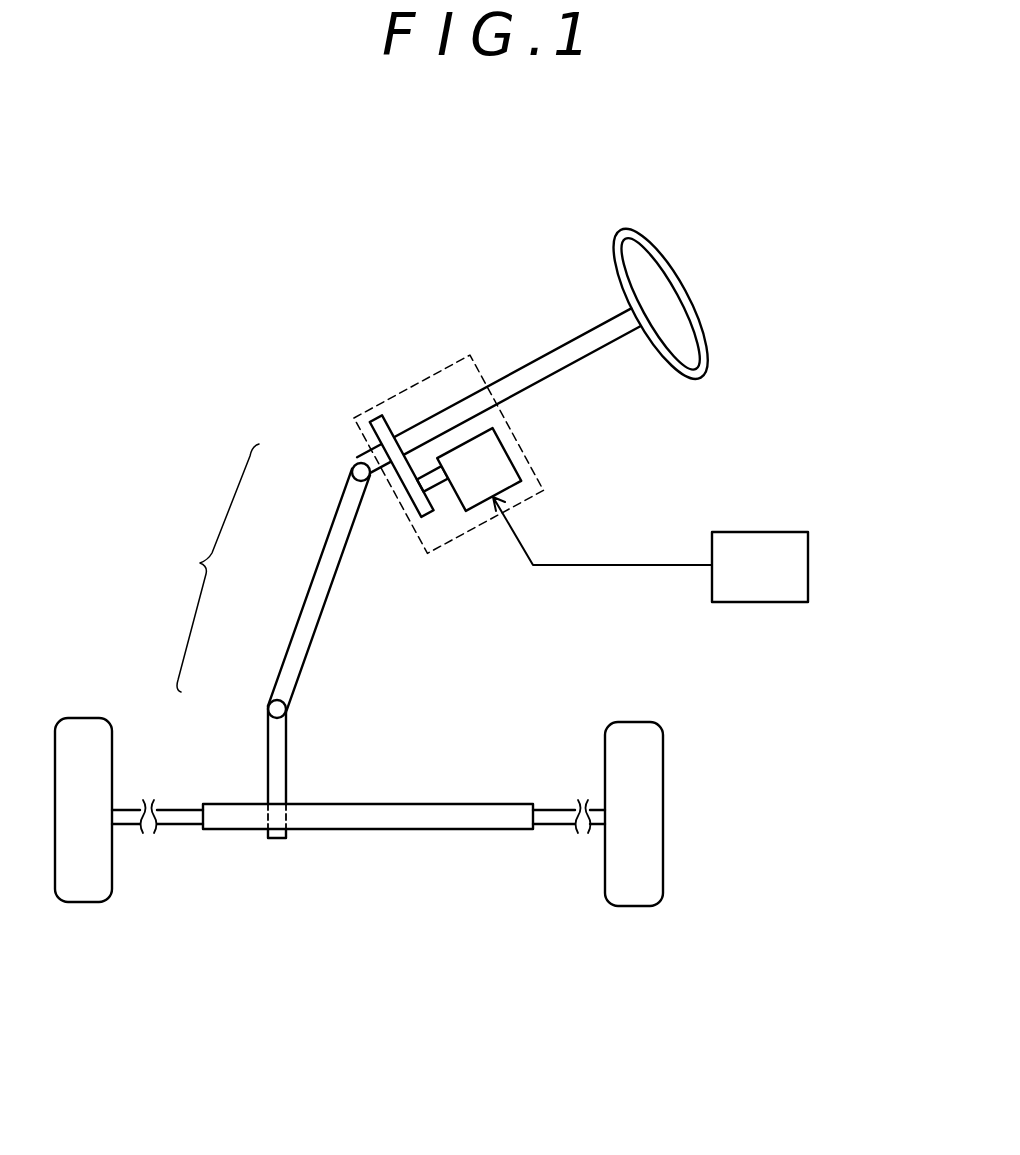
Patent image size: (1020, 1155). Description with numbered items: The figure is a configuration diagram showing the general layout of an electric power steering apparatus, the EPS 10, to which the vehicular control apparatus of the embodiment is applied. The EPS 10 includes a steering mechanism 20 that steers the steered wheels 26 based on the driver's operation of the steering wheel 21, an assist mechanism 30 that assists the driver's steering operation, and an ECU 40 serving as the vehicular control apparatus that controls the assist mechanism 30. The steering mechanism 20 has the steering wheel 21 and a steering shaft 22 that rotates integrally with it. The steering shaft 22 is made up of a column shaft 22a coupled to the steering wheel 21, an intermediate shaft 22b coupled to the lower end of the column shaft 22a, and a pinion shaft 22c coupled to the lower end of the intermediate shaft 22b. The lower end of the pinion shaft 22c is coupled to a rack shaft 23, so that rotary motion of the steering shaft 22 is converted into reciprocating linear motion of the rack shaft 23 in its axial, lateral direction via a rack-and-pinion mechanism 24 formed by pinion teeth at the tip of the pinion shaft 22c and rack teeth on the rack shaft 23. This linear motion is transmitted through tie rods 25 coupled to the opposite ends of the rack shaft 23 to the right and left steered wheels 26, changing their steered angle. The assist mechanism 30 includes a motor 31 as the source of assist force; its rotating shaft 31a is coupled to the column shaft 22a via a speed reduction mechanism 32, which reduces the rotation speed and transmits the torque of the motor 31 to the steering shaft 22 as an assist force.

The EPS 10 is at (820, 363).
The steering mechanism 20 is at (537, 378).
The steering wheel 21 is at (694, 298).
The steering shaft 22 is at (266, 586).
The column shaft 22a is at (352, 467).
The intermediate shaft 22b is at (312, 582).
The pinion shaft 22c is at (268, 728).
The rack shaft 23 is at (447, 830).
The rack-and-pinion mechanism 24 is at (250, 784).
The tie rods 25 is at (177, 826).
The steered wheels 26 is at (80, 903).
The assist mechanism 30 is at (448, 468).
The motor 31 is at (481, 504).
The rotating shaft 31a is at (436, 497).
The speed reduction mechanism 32 is at (404, 510).
The ECU 40 is at (809, 566).